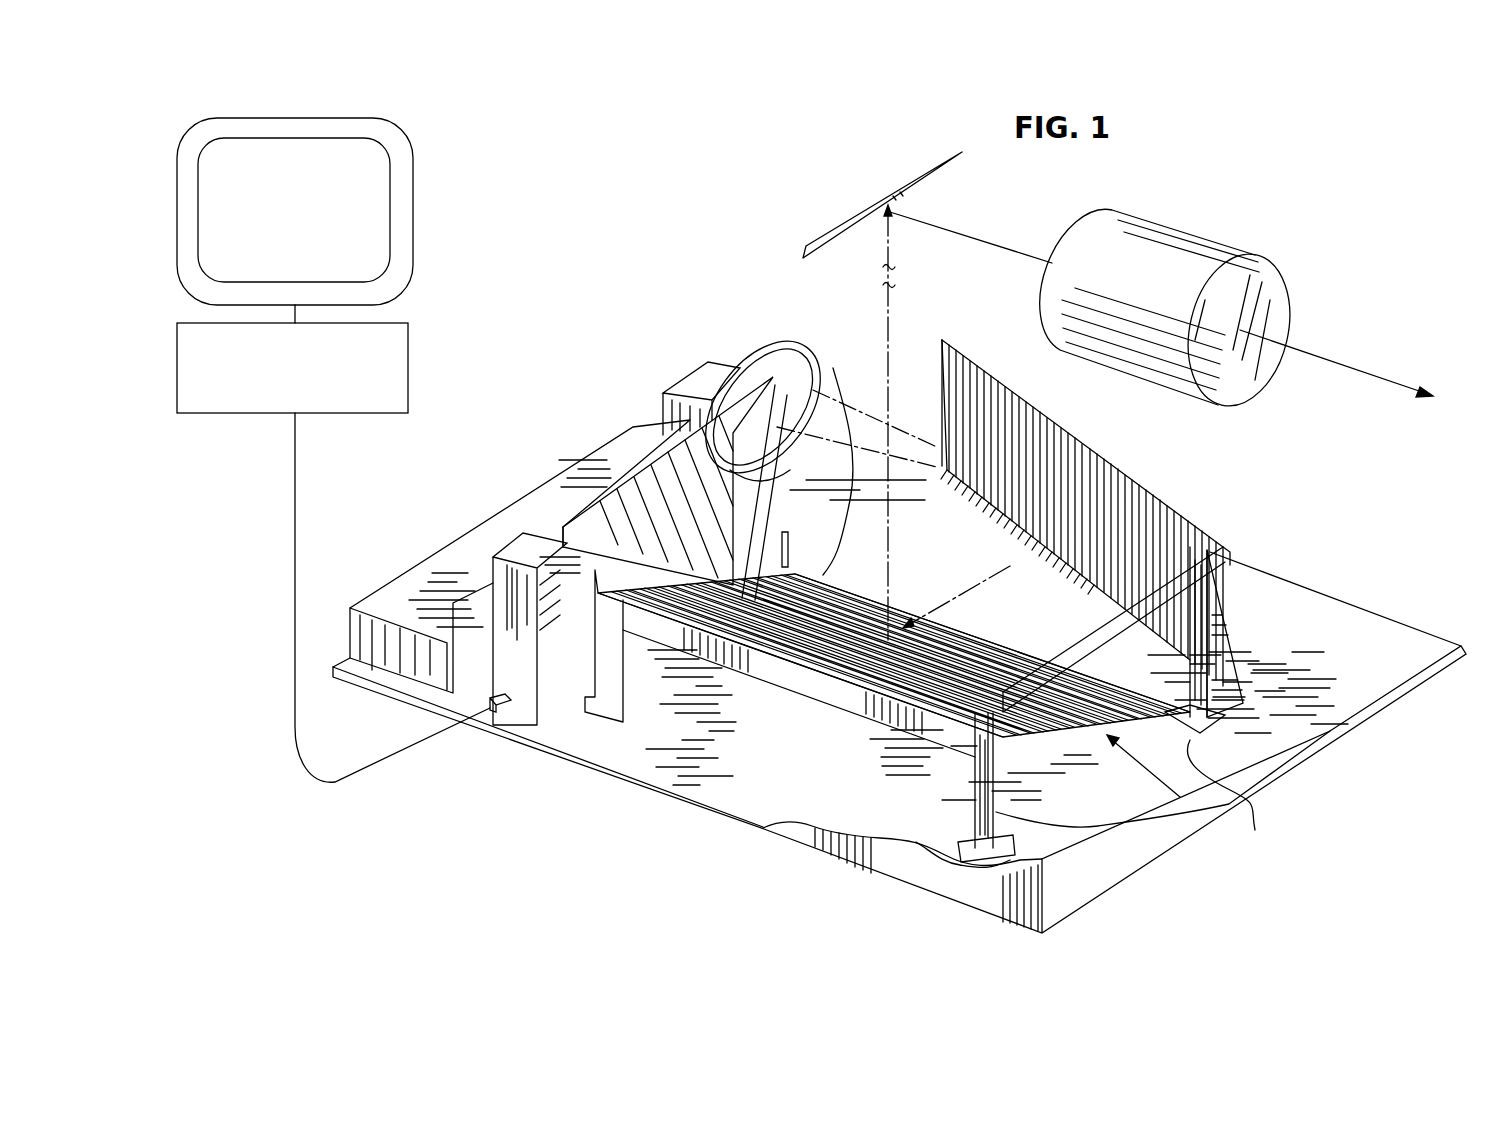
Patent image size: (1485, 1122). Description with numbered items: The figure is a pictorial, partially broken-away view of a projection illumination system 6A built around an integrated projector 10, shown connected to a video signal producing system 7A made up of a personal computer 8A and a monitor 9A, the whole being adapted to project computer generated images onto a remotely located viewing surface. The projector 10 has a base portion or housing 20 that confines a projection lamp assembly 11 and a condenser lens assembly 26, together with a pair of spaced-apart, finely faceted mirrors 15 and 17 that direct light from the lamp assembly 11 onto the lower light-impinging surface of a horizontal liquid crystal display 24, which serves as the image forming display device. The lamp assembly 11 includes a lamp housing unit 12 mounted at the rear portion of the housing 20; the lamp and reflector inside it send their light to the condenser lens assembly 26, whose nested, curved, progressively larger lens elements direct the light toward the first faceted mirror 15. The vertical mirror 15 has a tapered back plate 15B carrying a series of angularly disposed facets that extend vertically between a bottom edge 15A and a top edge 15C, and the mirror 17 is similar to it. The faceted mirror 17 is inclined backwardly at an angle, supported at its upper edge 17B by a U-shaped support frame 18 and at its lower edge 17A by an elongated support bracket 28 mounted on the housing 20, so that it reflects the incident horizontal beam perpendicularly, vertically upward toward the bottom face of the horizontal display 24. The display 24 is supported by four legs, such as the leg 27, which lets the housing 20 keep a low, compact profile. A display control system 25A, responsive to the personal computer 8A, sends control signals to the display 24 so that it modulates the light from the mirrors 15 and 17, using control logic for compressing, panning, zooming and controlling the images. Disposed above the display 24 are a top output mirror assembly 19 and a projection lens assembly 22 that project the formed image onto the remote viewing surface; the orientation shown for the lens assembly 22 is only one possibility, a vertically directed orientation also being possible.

The projection illumination system 6A is at (1318, 173).
The video signal producing system 7A is at (577, 151).
The personal computer 8A is at (408, 355).
The monitor 9A is at (413, 210).
The integrated projector 10 is at (479, 513).
The projection lamp assembly 11 is at (663, 393).
The lamp housing unit 12 is at (705, 360).
The first faceted mirror 15 is at (1147, 494).
The bottom edge 15A is at (850, 345).
The tapered back plate 15B is at (1243, 660).
The top edge 15C is at (1030, 408).
The second faceted mirror 17 is at (1207, 812).
The lower edge 17A is at (827, 413).
The upper edge 17B is at (770, 680).
The U-shaped support frame 18 is at (827, 703).
The top output mirror assembly 19 is at (862, 210).
The housing 20 is at (701, 811).
The projection lens assembly 22 is at (1187, 229).
The liquid crystal display 24 is at (630, 462).
The display control system 25A is at (523, 707).
The condenser lens assembly 26 is at (808, 338).
The leg 27 is at (1120, 859).
The elongated support bracket 28 is at (1190, 745).